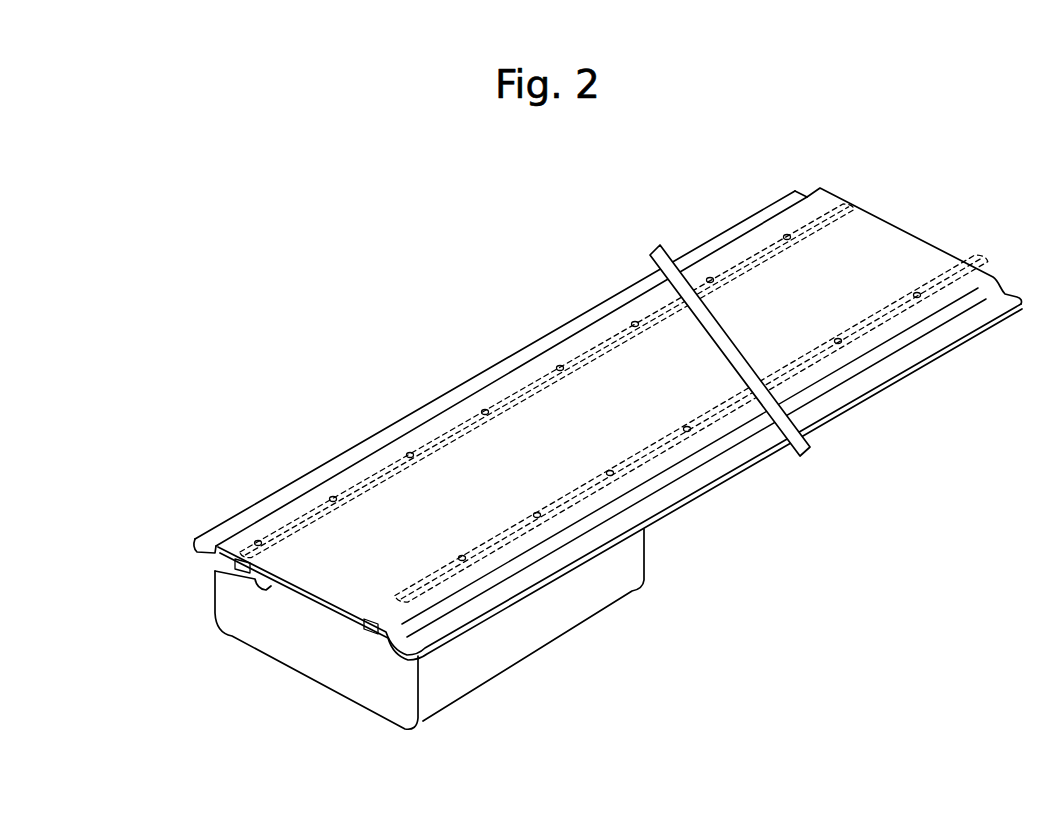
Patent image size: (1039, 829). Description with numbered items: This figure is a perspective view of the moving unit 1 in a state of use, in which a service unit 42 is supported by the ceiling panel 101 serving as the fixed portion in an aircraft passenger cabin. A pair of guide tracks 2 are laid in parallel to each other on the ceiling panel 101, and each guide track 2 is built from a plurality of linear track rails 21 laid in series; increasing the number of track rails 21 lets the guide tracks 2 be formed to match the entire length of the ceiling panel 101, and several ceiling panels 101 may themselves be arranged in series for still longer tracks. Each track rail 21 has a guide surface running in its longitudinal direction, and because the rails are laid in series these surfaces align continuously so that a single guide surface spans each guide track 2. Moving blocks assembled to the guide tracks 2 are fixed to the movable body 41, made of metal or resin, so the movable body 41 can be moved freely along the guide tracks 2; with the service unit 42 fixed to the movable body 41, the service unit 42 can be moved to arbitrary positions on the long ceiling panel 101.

The moving unit 1 is at (513, 313).
The guide tracks 2 is at (737, 268).
The track rails 21 is at (378, 490).
The movable body 41 is at (300, 591).
The service unit 42 is at (302, 643).
The ceiling panel 101 is at (907, 228).